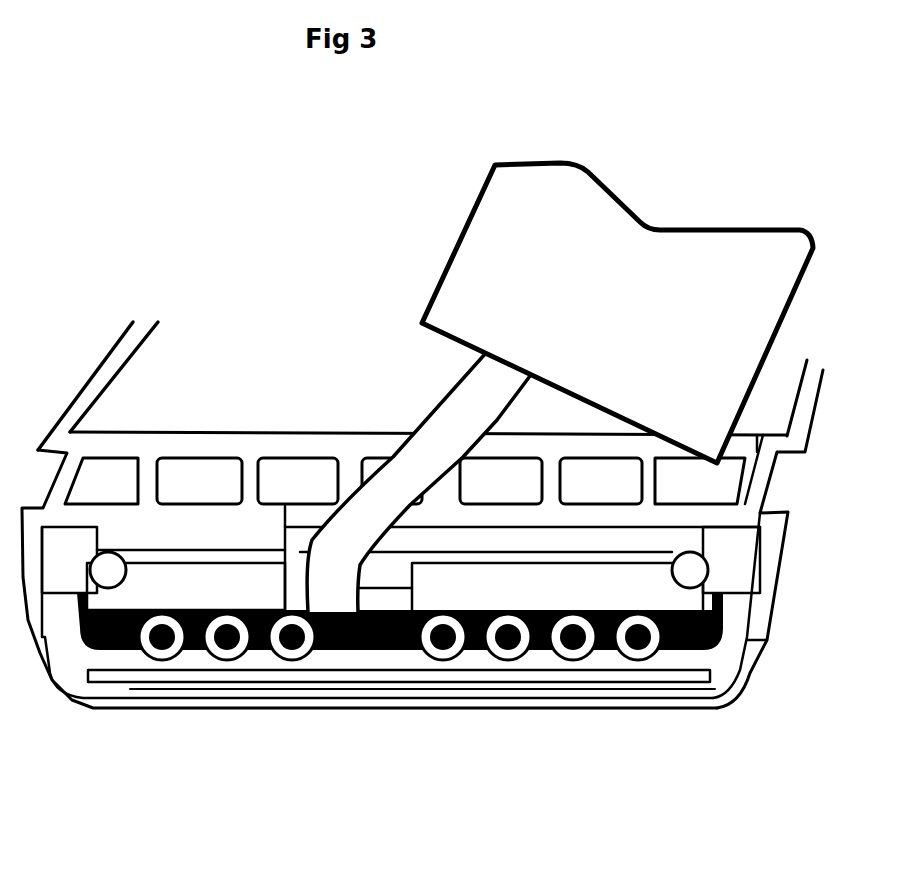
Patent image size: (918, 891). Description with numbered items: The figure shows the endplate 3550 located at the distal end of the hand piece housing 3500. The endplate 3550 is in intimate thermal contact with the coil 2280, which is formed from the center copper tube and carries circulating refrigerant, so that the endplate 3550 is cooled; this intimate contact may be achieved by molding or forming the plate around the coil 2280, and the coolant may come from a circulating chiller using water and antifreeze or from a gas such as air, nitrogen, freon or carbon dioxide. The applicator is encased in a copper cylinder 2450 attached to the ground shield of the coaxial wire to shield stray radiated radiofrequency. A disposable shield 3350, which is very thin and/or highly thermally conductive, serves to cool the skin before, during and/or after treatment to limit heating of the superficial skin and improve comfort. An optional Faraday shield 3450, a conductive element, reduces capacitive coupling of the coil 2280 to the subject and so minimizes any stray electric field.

The hand piece housing 3500 is at (100, 372).
The copper cylinder 2450 is at (500, 215).
The disposable shield 3350 is at (57, 690).
The Faraday shield 3450 is at (367, 678).
The coil 2280 is at (627, 653).
The endplate 3550 is at (727, 663).